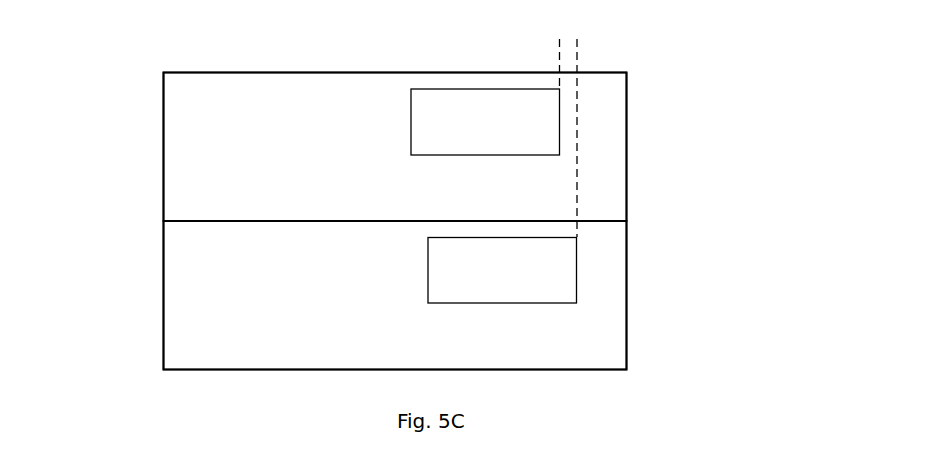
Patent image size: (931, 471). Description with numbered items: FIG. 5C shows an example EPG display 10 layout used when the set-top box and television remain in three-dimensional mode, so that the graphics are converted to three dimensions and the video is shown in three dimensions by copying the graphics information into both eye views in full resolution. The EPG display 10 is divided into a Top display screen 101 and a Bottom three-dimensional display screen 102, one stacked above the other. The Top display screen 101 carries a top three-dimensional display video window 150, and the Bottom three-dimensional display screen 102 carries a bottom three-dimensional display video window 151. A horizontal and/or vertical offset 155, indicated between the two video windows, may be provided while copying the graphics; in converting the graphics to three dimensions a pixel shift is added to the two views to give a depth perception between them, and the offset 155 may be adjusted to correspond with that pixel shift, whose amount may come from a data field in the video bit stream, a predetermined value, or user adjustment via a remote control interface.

The EPG display 10 is at (163, 90).
The Top display screen 101 is at (182, 176).
The Bottom 3D display screen 102 is at (182, 308).
The top 3D display video window 150 is at (560, 134).
The bottom 3D display video window 151 is at (577, 292).
The horizontal and/or vertical offset 155 is at (572, 40).